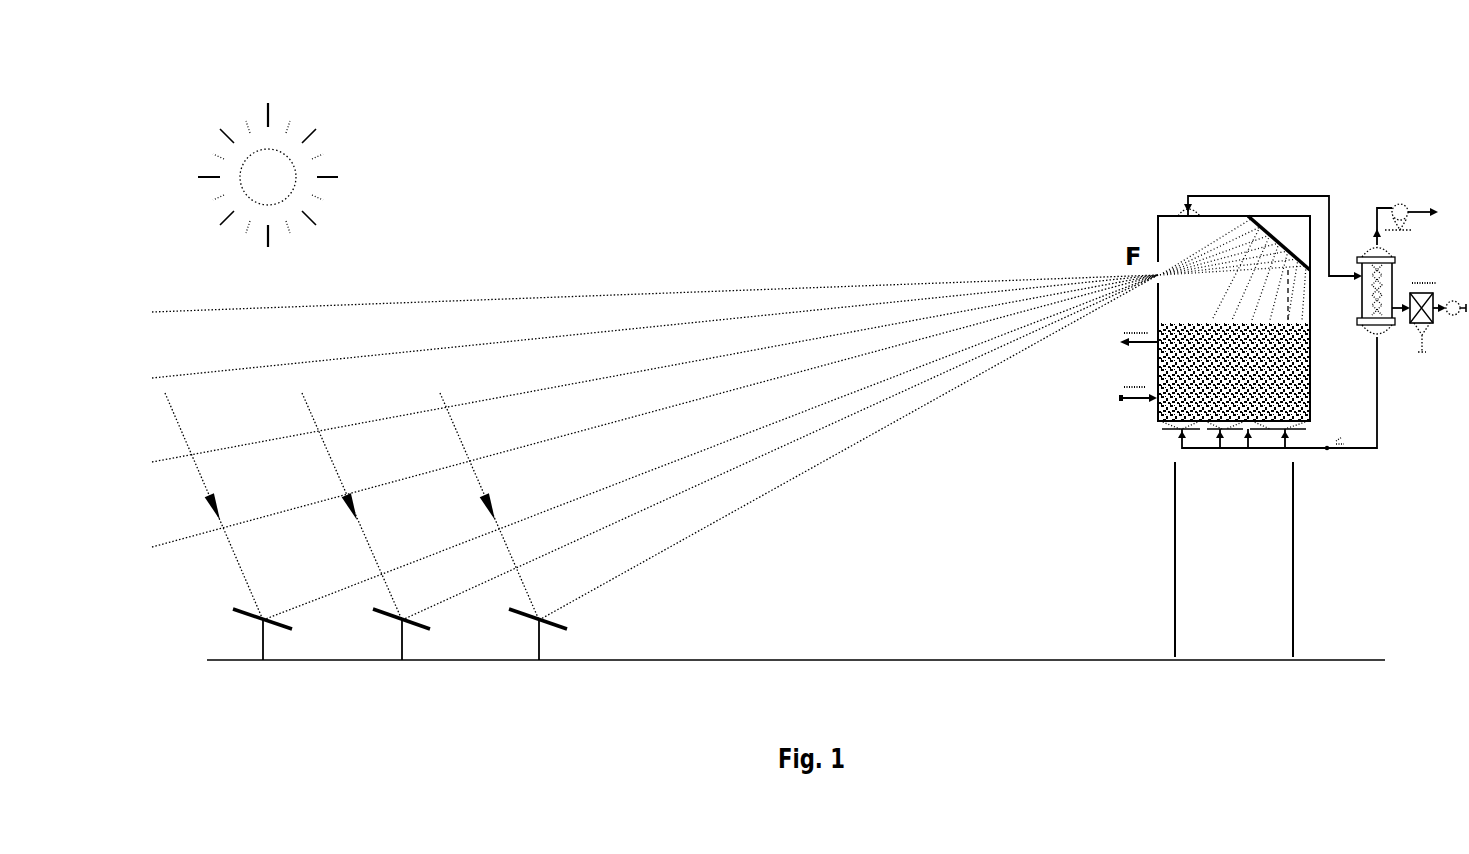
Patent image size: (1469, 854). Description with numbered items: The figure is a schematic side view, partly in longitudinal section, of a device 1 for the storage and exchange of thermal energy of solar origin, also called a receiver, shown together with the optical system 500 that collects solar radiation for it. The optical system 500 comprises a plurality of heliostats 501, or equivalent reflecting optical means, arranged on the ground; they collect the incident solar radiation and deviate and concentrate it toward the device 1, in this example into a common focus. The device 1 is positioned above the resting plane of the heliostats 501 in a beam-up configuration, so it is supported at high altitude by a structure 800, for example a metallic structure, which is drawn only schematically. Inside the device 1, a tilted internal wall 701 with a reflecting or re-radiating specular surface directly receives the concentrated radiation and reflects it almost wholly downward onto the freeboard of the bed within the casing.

The device for the storage and exchange of thermal energy 1 is at (1120, 177).
The optical system for collecting the solar radiation 500 is at (188, 590).
The heliostat 501 is at (263, 642).
The tilted internal wall 701 is at (1277, 243).
The structure 800 is at (1306, 565).